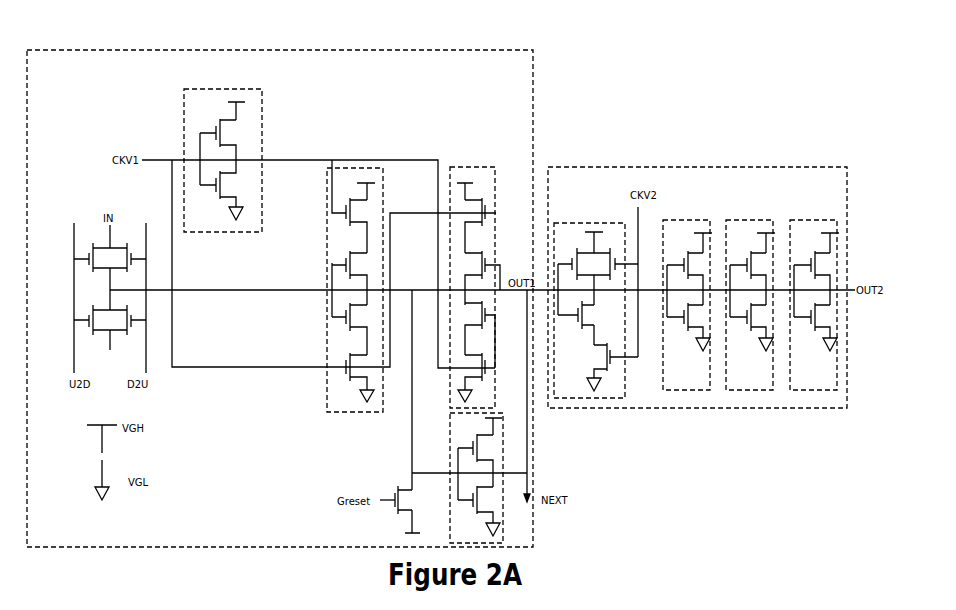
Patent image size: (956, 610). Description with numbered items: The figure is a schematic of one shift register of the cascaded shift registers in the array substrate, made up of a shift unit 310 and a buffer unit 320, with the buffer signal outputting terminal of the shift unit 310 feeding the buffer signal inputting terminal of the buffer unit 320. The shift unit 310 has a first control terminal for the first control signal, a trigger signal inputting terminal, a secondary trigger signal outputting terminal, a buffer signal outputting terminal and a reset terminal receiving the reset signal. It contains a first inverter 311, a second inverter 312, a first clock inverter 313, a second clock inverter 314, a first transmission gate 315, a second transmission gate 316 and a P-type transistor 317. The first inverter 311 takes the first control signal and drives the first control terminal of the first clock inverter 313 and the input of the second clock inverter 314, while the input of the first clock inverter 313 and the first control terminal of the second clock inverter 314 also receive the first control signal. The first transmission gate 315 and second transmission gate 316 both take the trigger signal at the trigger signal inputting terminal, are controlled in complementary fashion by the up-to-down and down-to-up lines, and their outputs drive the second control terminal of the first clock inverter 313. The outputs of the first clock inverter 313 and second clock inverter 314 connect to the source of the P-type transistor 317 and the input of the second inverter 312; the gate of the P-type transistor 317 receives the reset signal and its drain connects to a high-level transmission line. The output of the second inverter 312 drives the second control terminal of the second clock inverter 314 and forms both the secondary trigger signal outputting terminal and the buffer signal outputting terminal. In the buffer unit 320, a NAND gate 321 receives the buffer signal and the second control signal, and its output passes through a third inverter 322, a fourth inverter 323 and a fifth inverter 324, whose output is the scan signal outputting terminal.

The shift unit 310 is at (353, 50).
The first inverter 311 is at (225, 89).
The second inverter 312 is at (498, 453).
The first clock inverter 313 is at (338, 168).
The second clock inverter 314 is at (478, 167).
The first transmission gate 315 is at (110, 247).
The second transmission gate 316 is at (110, 310).
The P-type transistor 317 is at (403, 487).
The buffer unit 320 is at (755, 167).
The NAND gate 321 is at (588, 223).
The third inverter 322 is at (678, 220).
The fourth inverter 323 is at (736, 220).
The fifth inverter 324 is at (808, 220).